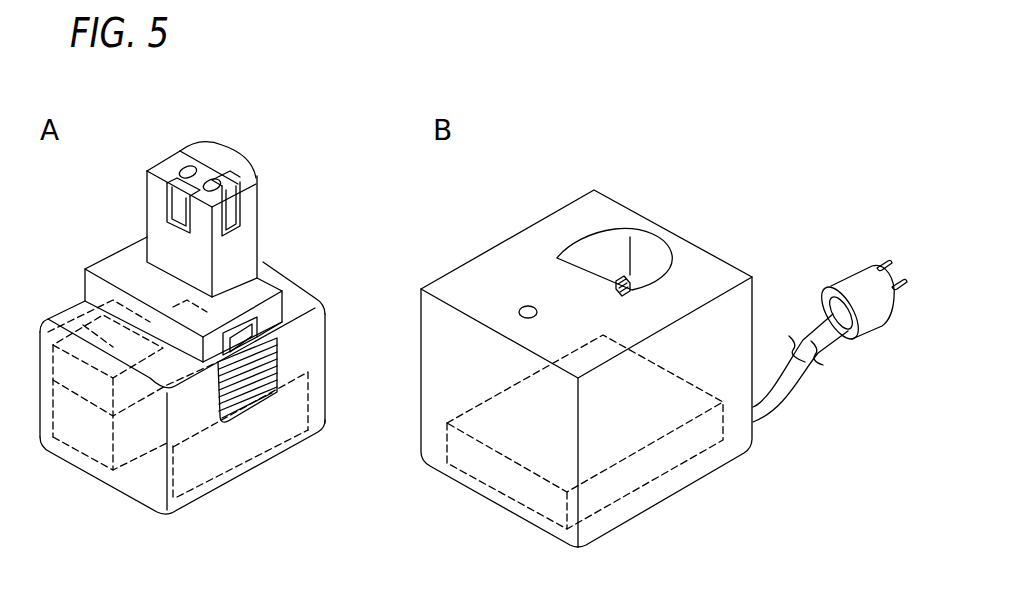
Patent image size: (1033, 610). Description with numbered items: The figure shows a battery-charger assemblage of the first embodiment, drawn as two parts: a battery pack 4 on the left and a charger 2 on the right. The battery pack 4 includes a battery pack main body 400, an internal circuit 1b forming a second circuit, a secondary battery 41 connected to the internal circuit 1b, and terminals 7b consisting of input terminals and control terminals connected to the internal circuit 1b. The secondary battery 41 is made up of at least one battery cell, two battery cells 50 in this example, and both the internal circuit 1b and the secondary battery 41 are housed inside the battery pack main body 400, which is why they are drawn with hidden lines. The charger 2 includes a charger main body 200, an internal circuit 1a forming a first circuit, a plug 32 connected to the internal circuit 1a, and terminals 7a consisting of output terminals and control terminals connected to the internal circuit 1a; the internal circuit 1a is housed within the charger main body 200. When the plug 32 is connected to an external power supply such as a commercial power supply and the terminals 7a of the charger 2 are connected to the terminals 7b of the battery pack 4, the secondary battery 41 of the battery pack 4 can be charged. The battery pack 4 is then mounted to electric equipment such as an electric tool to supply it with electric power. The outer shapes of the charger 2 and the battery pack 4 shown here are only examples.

The battery pack 4 is at (278, 178).
The terminals 7b is at (243, 210).
The battery pack main body 400 is at (306, 288).
The internal circuit 1b is at (83, 325).
The battery cells 50 is at (83, 435).
The secondary battery 41 is at (192, 493).
The charger 2 is at (737, 240).
The charger main body 200 is at (557, 228).
The terminals 7a is at (633, 289).
The internal circuit 1a is at (658, 462).
The plug 32 is at (852, 283).